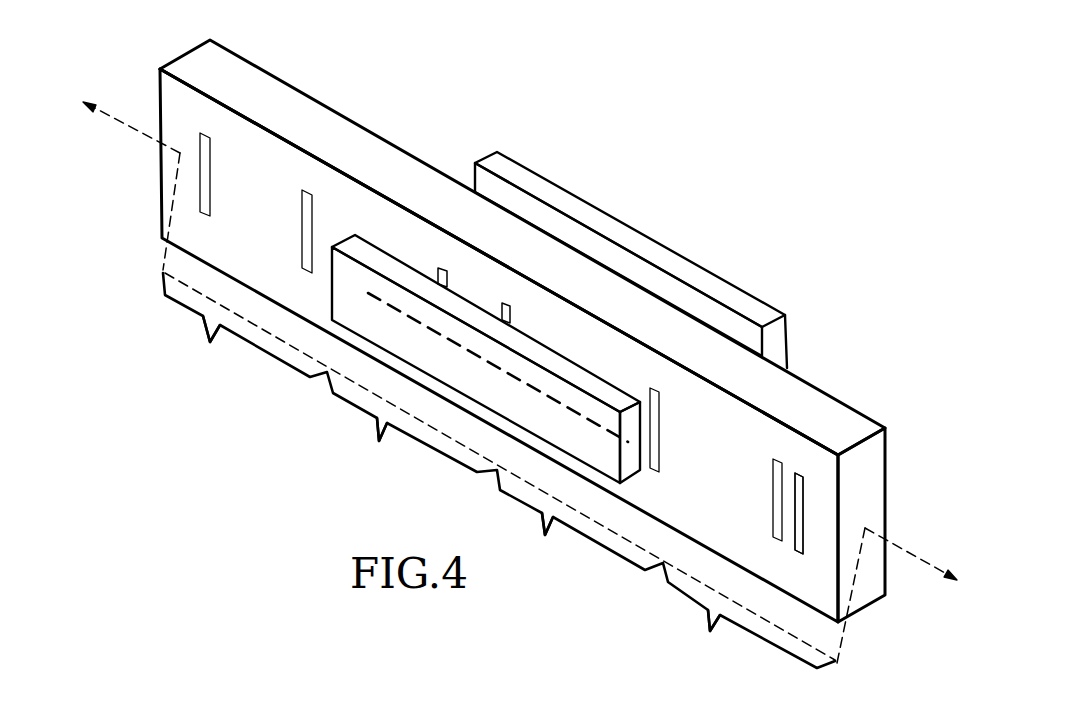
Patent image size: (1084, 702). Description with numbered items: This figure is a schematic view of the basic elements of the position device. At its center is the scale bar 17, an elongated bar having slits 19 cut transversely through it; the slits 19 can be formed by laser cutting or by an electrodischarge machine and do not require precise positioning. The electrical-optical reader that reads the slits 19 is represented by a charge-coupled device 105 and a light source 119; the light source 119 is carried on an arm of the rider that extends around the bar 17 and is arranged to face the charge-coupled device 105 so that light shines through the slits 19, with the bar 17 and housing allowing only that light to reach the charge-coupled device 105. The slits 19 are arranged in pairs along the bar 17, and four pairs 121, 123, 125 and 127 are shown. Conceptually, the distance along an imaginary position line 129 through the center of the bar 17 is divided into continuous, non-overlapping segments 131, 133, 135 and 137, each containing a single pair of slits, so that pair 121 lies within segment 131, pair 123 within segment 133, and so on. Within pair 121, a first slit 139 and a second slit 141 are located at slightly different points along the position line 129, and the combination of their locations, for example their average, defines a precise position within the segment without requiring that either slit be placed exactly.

The scale bar 17 is at (747, 385).
The slits 19 is at (261, 386).
The charge-coupled device 105 is at (500, 398).
The light source 119 is at (622, 237).
The pair of slits 121 is at (800, 451).
The pair of slits 123 is at (650, 352).
The pair of slits 125 is at (486, 267).
The pair of slits 127 is at (239, 137).
The position line 129 is at (137, 130).
The segment 131 is at (706, 633).
The segment 133 is at (543, 535).
The segment 135 is at (375, 441).
The segment 137 is at (216, 343).
The first slit 139 is at (803, 490).
The second slit 141 is at (772, 493).